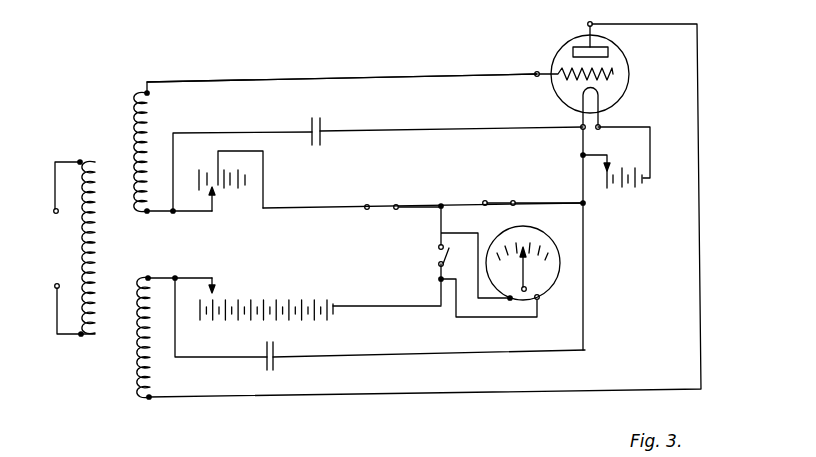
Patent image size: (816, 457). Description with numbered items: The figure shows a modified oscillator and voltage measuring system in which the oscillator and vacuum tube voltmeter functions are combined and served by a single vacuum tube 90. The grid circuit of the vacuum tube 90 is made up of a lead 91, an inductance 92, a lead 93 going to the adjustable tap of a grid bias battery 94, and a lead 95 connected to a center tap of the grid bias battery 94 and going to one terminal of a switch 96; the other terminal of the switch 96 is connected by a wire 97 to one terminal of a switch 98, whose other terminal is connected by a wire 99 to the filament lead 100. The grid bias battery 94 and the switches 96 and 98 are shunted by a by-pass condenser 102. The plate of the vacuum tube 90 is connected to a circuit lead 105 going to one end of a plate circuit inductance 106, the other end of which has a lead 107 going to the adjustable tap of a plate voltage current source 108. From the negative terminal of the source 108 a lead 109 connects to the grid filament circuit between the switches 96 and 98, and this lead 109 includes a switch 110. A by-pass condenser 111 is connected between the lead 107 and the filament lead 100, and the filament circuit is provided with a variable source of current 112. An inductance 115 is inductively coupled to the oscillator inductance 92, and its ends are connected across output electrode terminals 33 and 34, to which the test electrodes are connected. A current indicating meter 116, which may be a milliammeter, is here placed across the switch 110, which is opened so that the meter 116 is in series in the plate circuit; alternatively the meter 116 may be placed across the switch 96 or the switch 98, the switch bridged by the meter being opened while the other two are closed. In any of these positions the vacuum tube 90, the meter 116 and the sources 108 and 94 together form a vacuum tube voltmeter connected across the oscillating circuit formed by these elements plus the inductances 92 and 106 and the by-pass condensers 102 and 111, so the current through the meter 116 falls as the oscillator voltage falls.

The output electrode terminal 33 is at (54, 209).
The output electrode terminal 34 is at (55, 285).
The inductance 115 is at (96, 232).
The inductance 92 is at (133, 110).
The lead 91 is at (338, 78).
The vacuum tube 90 is at (563, 50).
The circuit lead 105 is at (700, 212).
The by-pass condenser 102 is at (326, 123).
The lead 93 is at (209, 214).
The grid bias battery 94 is at (238, 190).
The lead 95 is at (290, 208).
The switch 96 is at (370, 205).
The wire 97 is at (440, 188).
The switch 98 is at (489, 201).
The wire 99 is at (566, 186).
The filament lead 100 is at (586, 205).
The variable source of current 112 is at (640, 184).
The current indicating meter 116 is at (578, 222).
The switch 110 is at (440, 258).
The lead 109 is at (416, 308).
The lead 107 is at (216, 250).
The plate voltage current source 108 is at (252, 298).
The by-pass condenser 111 is at (276, 365).
The plate circuit inductance 106 is at (133, 362).